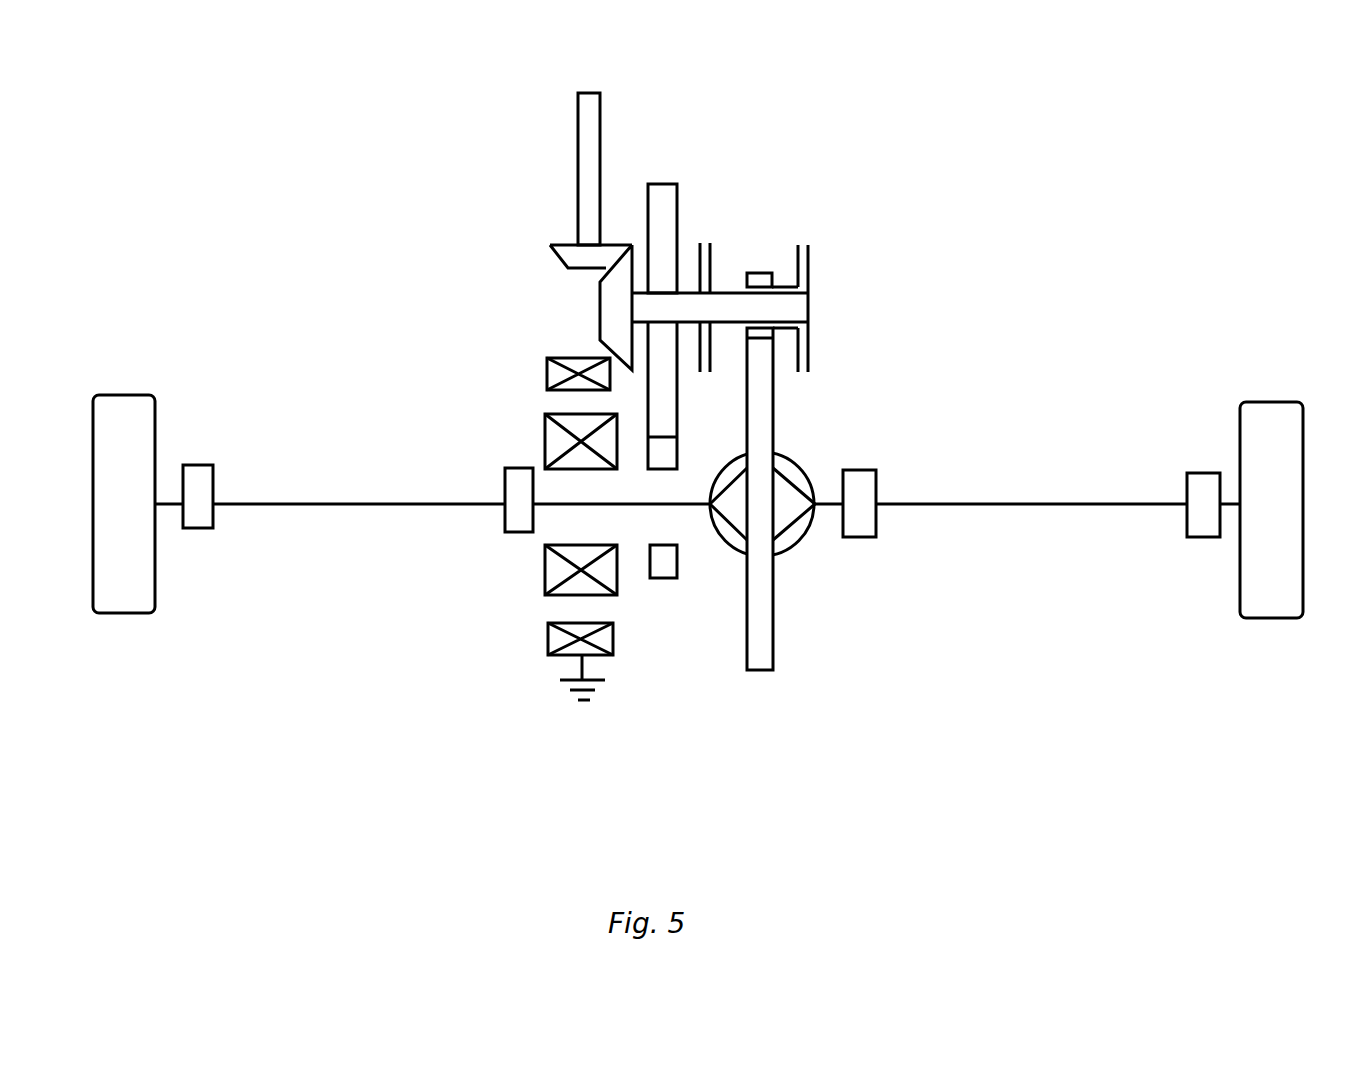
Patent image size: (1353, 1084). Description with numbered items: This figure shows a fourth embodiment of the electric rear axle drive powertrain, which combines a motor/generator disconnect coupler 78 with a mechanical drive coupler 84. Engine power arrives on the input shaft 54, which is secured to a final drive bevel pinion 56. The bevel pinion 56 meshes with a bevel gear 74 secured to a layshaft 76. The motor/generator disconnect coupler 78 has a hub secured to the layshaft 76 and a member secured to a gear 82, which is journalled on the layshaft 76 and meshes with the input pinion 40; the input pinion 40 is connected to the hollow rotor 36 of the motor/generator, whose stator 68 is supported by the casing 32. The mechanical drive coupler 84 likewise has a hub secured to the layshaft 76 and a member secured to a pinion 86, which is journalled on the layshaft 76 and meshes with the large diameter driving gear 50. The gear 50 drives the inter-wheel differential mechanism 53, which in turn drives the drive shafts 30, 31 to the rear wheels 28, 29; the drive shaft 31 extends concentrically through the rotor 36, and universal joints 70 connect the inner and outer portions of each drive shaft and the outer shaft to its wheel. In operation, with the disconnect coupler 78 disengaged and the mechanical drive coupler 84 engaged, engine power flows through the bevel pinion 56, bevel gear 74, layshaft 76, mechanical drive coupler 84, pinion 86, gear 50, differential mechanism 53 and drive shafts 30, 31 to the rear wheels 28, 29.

The rear wheel 28 is at (1270, 618).
The rear wheel 29 is at (125, 613).
The drive shaft 30 is at (1072, 505).
The drive shaft 31 is at (312, 504).
The casing 32 is at (568, 693).
The hollow rotor 36 is at (545, 440).
The input pinion 40 is at (663, 578).
The large diameter driving gear 50 is at (760, 670).
The inter-wheel differential mechanism 53 is at (803, 540).
The input shaft 54 is at (578, 155).
The bevel pinion 56 is at (562, 258).
The stator 68 is at (548, 638).
The universal joints 70 is at (196, 530).
The bevel gear 74 is at (600, 310).
The layshaft 76 is at (808, 310).
The motor/generator disconnect coupler 78 is at (710, 243).
The gear 82 is at (663, 184).
The mechanical drive coupler 84 is at (808, 262).
The pinion 86 is at (758, 273).